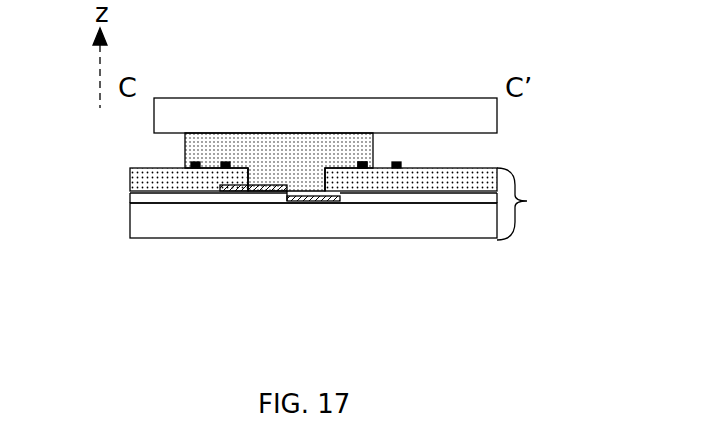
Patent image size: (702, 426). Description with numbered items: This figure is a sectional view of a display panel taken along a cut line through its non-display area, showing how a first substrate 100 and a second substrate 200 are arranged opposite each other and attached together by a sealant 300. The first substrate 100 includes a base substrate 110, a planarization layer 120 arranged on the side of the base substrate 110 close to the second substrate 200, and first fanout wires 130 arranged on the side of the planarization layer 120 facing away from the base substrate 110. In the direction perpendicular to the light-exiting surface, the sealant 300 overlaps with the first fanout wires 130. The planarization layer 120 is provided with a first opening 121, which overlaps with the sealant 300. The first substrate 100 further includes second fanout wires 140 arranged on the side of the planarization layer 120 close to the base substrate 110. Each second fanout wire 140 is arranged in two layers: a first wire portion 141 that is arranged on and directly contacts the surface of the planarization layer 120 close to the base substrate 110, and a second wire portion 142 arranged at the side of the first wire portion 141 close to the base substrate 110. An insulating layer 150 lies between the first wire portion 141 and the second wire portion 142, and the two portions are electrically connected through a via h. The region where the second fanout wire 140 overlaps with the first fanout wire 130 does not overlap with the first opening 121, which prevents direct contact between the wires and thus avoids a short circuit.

The first substrate 100 is at (539, 204).
The base substrate 110 is at (155, 219).
The planarization layer 120 is at (155, 184).
The first opening 121 is at (257, 188).
The via h is at (297, 190).
The first fanout wire 130 is at (362, 168).
The second fanout wire 140 is at (265, 269).
The first wire portion 141 is at (249, 192).
The second wire portion 142 is at (312, 201).
The insulating layer 150 is at (438, 197).
The second substrate 200 is at (458, 121).
The sealant 300 is at (205, 147).